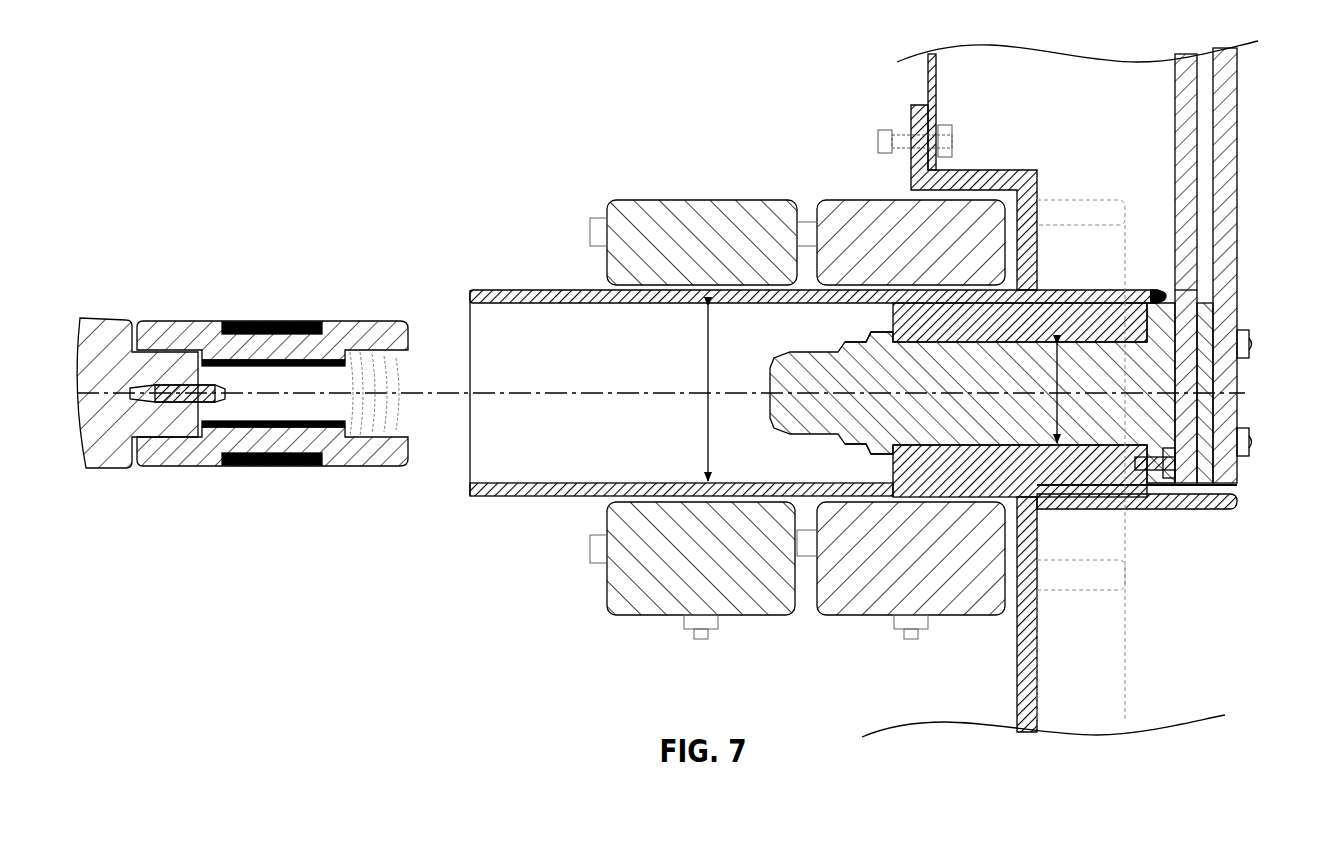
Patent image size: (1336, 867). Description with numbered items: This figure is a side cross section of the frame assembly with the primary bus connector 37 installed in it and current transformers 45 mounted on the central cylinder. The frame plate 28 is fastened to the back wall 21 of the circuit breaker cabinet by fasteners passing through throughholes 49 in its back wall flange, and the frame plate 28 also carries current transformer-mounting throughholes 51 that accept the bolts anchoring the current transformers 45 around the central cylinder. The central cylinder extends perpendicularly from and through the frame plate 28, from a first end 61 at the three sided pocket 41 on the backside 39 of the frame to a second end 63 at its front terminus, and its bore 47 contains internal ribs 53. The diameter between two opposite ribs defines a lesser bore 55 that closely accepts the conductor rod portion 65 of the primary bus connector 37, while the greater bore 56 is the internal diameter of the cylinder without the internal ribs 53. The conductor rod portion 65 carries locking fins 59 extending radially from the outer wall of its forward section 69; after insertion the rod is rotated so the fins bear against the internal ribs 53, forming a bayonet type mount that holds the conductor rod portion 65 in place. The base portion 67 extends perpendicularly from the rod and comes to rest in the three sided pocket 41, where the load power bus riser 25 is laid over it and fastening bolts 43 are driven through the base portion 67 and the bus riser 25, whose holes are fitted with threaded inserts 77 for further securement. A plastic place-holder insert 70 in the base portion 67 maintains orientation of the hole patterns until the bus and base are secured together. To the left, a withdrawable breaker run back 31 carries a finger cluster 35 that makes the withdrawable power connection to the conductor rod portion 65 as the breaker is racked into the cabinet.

The back wall 21 is at (938, 84).
The load power bus riser 25 is at (1178, 99).
The frame plate 28 is at (1123, 207).
The withdrawable breaker run back 31 is at (345, 320).
The finger cluster 35 is at (382, 445).
The primary bus connector 37 is at (937, 379).
The backside 39 is at (1125, 666).
The three sided pocket 41 is at (1178, 293).
The fastening bolt 43 is at (1252, 347).
The current transformer 45 is at (631, 206).
The bore 47 is at (619, 381).
The throughhole 49 is at (952, 134).
The current transformer-mounting throughhole 51 is at (1045, 229).
The internal rib 53 is at (1062, 300).
The lesser bore 55 is at (1058, 385).
The greater bore 56 is at (709, 346).
The locking fin 59 is at (880, 338).
The first end 61 is at (1103, 298).
The second end 63 is at (470, 318).
The conductor rod portion 65 is at (1205, 401).
The base portion 67 is at (1153, 286).
The forward section 69 is at (858, 412).
The plastic place-holder insert 70 is at (1150, 488).
The threaded insert 77 is at (1249, 331).